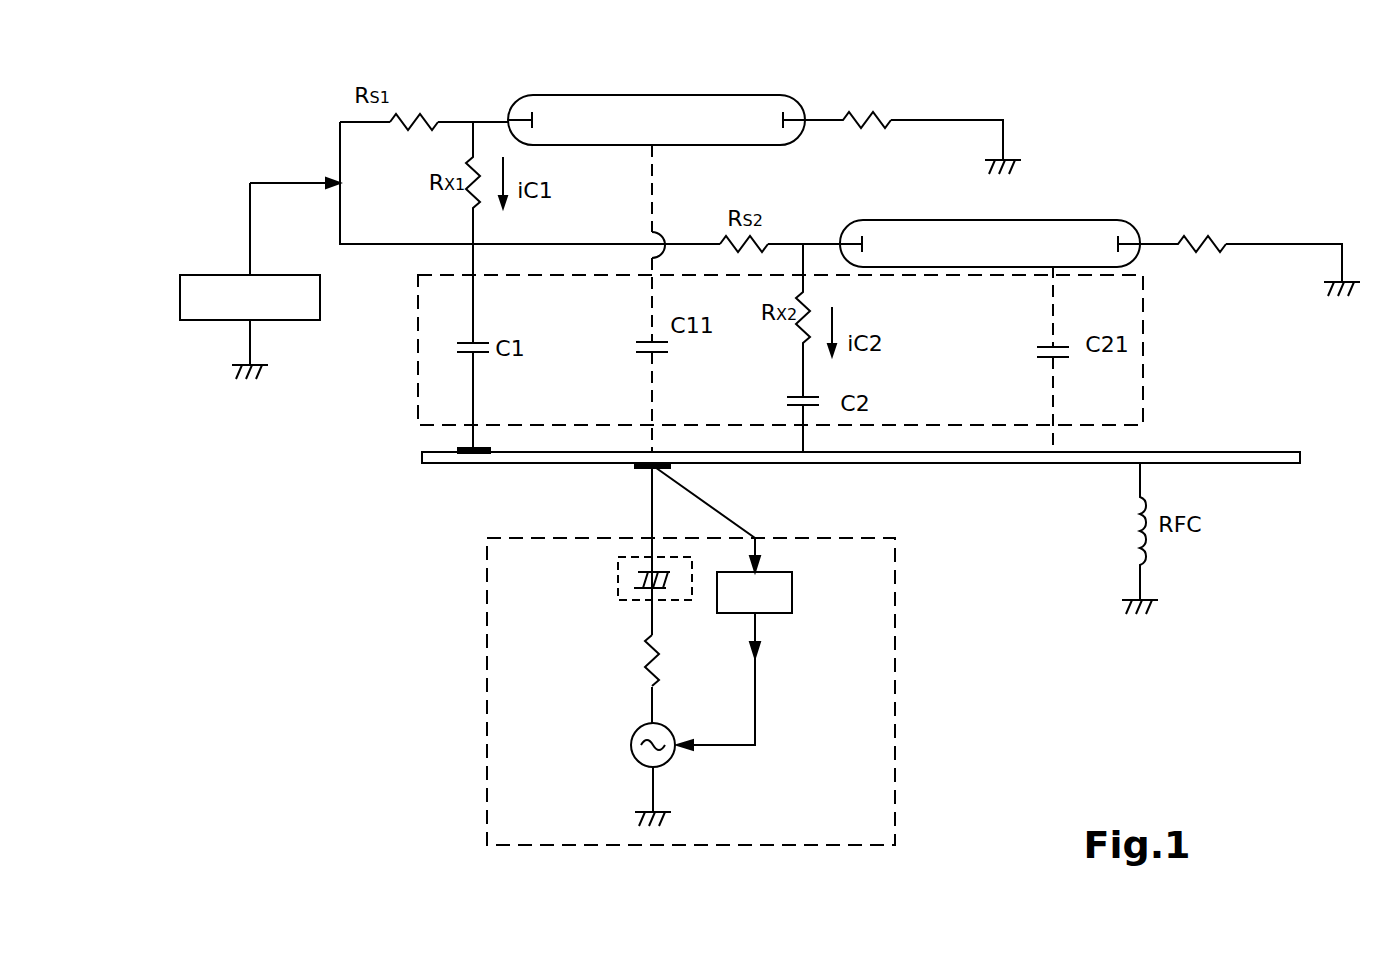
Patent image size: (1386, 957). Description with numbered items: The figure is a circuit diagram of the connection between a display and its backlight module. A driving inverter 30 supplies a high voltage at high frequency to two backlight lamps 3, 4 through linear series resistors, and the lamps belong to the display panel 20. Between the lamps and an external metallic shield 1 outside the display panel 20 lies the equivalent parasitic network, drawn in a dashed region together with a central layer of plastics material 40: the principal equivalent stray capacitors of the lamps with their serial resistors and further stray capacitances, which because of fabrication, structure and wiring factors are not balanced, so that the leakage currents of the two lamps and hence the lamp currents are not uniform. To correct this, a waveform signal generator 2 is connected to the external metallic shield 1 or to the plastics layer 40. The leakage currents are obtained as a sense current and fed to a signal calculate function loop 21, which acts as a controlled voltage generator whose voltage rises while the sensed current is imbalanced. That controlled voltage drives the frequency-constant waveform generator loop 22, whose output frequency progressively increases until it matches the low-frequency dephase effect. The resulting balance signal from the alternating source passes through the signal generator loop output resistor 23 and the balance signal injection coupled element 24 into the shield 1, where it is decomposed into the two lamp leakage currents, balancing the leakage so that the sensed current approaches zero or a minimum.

The external metallic shield 1 is at (437, 465).
The waveform signal generator 2 is at (696, 679).
The lamp 3 is at (743, 108).
The lamp 4 is at (1090, 232).
The display panel 20 is at (905, 114).
The signal calculate function loop 21 is at (782, 593).
The frequency-constant waveform generator loop 22 is at (628, 773).
The signal generator loop output resistor 23 is at (648, 683).
The balance signal injection coupled element 24 is at (618, 586).
The driving inverter 30 is at (180, 310).
The central layer of plastics material 40 is at (1143, 393).